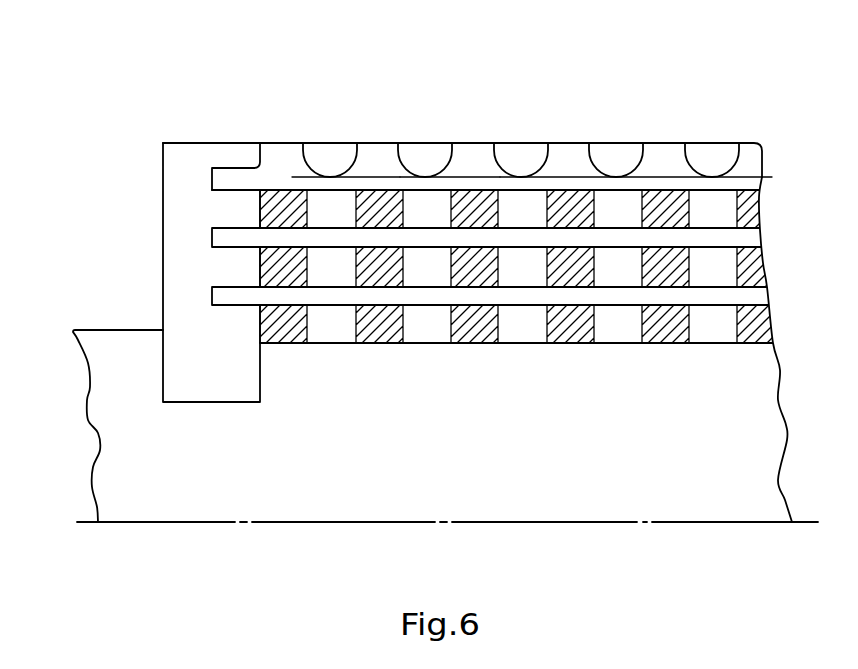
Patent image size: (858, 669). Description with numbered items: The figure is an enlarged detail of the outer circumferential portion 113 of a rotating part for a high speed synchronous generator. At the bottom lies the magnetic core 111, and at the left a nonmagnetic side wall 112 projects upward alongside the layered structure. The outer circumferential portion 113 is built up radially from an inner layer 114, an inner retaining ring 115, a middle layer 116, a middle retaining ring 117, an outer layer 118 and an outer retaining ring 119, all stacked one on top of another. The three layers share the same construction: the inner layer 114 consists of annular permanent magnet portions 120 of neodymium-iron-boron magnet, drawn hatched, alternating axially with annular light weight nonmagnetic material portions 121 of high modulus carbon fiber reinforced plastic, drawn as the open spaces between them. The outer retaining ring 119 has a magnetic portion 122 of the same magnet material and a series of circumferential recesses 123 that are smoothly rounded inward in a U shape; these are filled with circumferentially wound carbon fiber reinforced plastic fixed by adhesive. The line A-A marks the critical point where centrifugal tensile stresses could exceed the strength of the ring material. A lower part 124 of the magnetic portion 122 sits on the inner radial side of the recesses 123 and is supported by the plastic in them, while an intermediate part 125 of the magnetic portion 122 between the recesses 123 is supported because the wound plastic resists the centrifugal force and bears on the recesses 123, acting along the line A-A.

The magnetic core 111 is at (190, 500).
The nonmagnetic side wall 112 is at (195, 215).
The outer circumferential portion 113 is at (615, 123).
The inner layer 114 is at (570, 333).
The inner retaining ring 115 is at (710, 295).
The middle layer 116 is at (667, 268).
The middle retaining ring 117 is at (617, 243).
The outer layer 118 is at (623, 210).
The outer retaining ring 119 is at (569, 158).
The permanent magnet portion 120 is at (375, 333).
The nonmagnetic material portion 121 is at (437, 332).
The magnetic portion 122 is at (473, 158).
The circumferential recess 123 is at (425, 160).
The lower part 124 is at (312, 187).
The intermediate part 125 is at (378, 173).